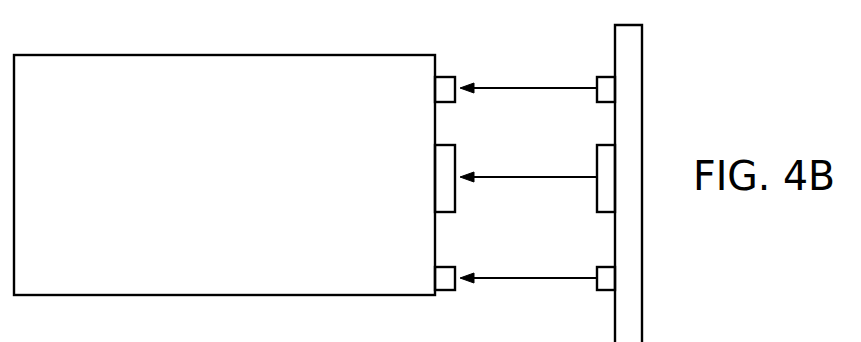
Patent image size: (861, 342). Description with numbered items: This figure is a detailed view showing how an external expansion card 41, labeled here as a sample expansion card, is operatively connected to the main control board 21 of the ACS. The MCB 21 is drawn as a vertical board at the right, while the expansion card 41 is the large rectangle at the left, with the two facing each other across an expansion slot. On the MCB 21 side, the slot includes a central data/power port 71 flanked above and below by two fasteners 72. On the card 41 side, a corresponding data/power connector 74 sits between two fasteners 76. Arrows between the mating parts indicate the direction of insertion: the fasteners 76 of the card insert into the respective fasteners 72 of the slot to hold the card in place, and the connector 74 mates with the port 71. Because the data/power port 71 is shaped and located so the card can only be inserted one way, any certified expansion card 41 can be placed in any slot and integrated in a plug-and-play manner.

The main control board 21 is at (643, 119).
The expansion card 41 is at (240, 219).
The data/power port 71 is at (601, 145).
The fasteners 72 is at (597, 79).
The data/power connector 74 is at (447, 145).
The fasteners 76 is at (449, 77).